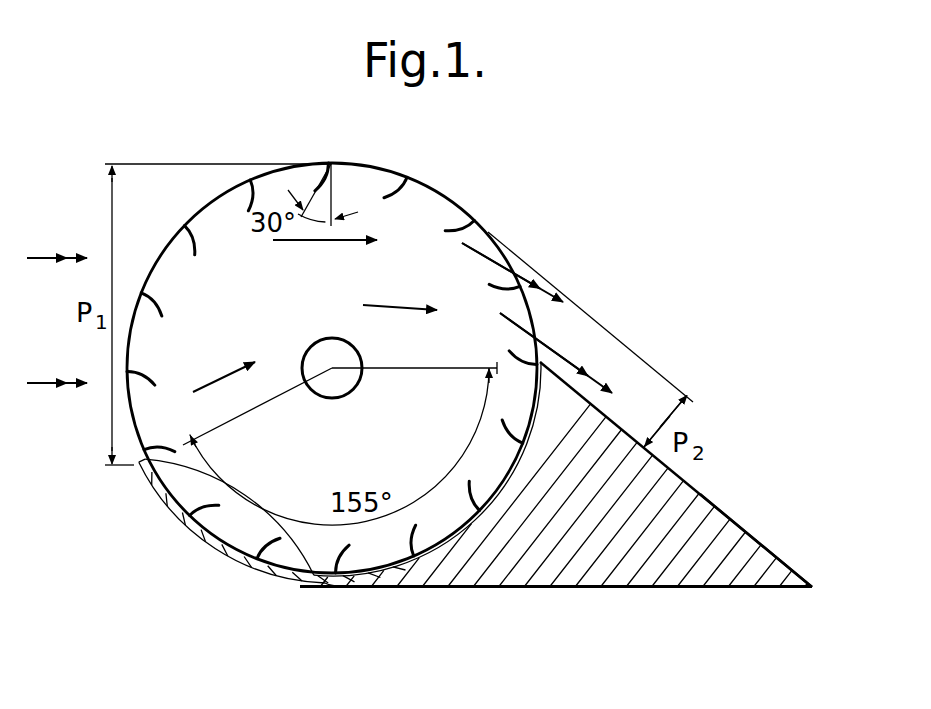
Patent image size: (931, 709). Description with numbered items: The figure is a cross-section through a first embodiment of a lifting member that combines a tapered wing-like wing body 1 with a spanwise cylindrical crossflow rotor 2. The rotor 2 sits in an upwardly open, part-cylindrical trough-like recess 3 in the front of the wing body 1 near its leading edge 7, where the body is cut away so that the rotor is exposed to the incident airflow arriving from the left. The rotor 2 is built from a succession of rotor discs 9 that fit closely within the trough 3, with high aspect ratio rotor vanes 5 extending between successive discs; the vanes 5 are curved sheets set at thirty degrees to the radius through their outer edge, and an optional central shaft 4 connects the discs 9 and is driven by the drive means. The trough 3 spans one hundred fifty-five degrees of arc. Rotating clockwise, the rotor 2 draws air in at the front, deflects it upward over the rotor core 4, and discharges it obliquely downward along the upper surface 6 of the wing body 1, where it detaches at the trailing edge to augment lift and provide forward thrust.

The wing body 1 is at (752, 486).
The crossflow rotor 2 is at (496, 227).
The trough-like recess 3 is at (197, 538).
The central shaft 4 is at (320, 355).
The rotor vanes 5 is at (428, 192).
The upper surface 6 is at (764, 542).
The leading edge 7 is at (140, 463).
The rotor discs 9 is at (220, 222).